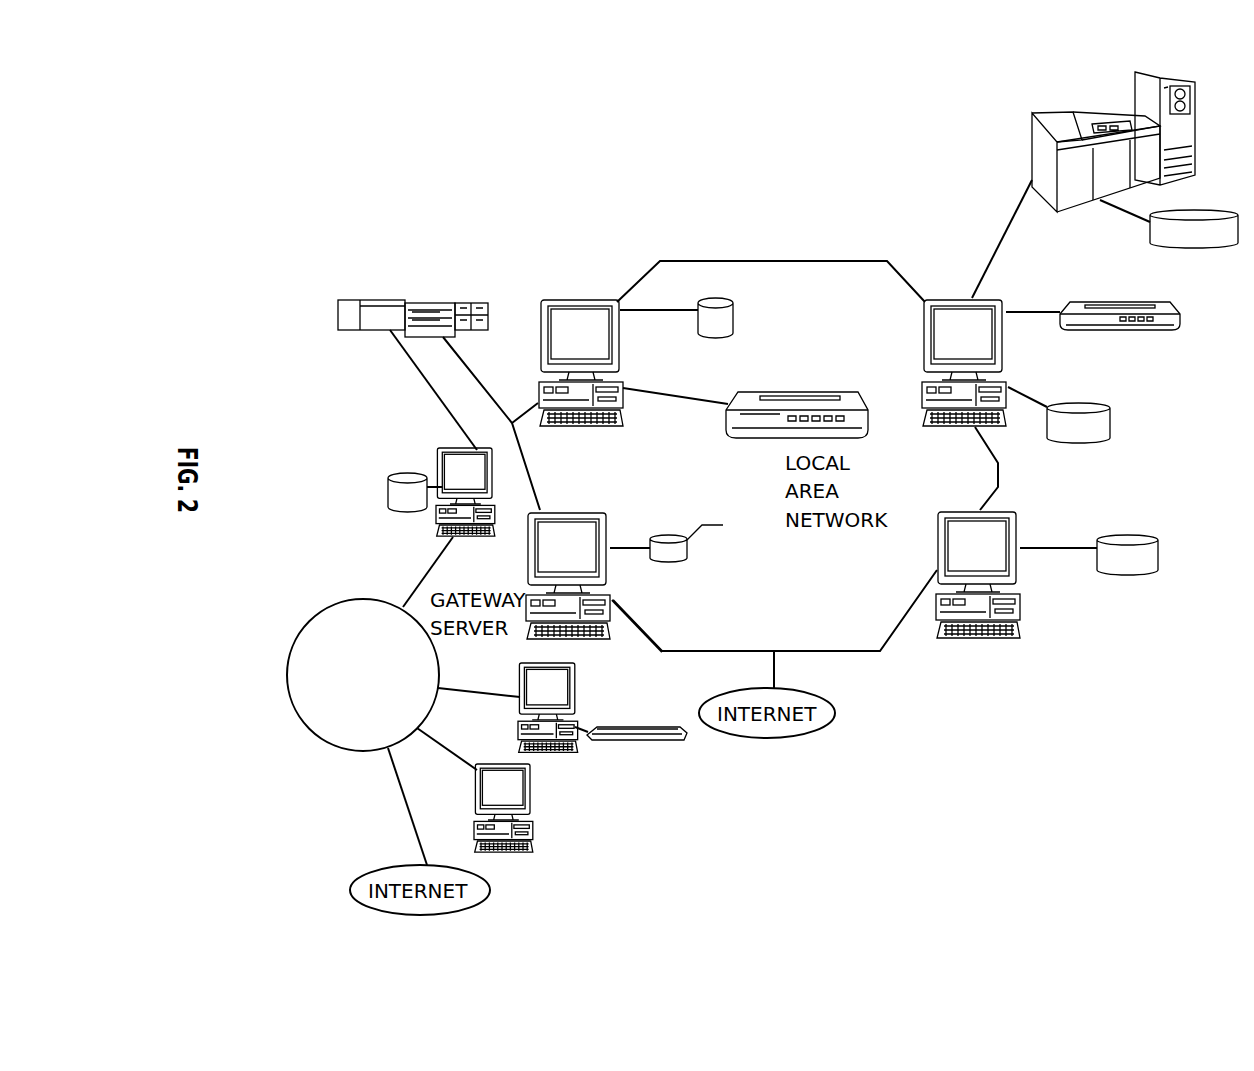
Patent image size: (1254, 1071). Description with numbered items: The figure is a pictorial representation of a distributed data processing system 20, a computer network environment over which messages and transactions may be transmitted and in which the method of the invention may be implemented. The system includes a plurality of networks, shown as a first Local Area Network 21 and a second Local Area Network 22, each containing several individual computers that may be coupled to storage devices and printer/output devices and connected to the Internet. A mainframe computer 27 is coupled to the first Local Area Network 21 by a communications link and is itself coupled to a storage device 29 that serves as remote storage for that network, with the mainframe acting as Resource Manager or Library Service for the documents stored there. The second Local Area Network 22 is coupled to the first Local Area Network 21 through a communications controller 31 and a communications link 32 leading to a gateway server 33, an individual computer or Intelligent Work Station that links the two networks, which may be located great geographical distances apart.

The distributed data processing system 20 is at (783, 248).
The local area network 21 is at (880, 651).
The local area network 22 is at (363, 598).
The mainframe computer 27 is at (1080, 115).
The storage device 29 is at (1180, 213).
The communications controller 31 is at (486, 303).
The communications link 32 is at (422, 382).
The gateway server 33 is at (448, 452).